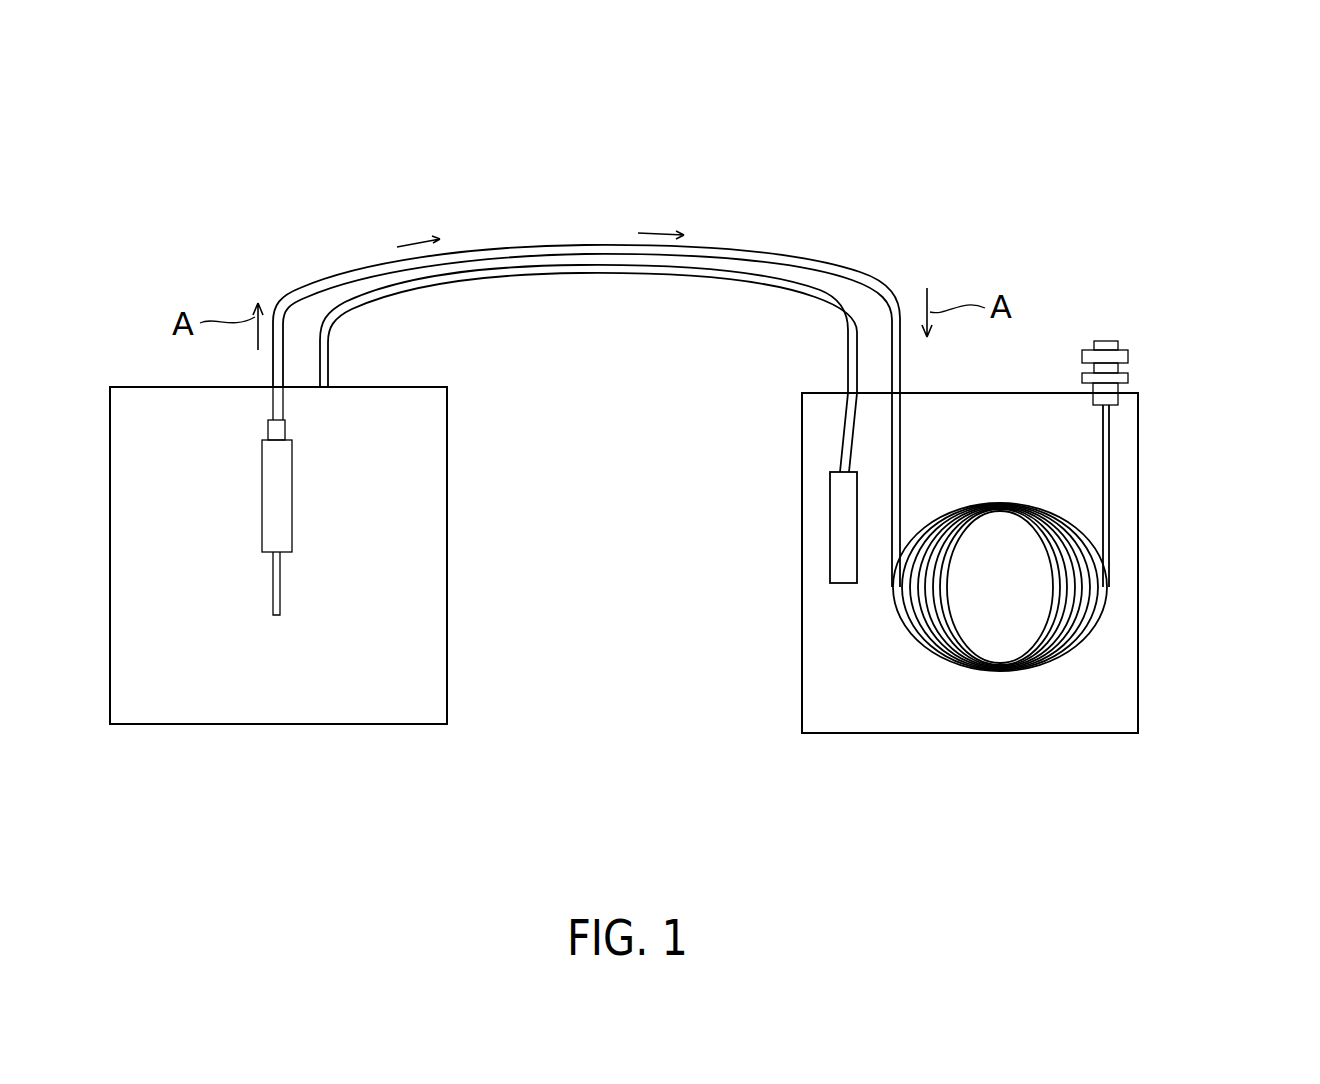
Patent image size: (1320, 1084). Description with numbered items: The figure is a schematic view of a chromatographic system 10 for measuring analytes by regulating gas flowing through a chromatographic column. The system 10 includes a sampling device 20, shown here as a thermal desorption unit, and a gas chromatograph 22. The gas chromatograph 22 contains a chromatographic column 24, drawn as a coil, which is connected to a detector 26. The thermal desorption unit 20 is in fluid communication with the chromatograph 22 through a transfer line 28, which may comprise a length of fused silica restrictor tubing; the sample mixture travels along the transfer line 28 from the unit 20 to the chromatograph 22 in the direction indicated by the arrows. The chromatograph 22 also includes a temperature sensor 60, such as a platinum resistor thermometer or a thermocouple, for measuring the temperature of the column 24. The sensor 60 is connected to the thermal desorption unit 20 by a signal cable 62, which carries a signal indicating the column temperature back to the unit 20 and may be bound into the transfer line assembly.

The chromatographic system 10 is at (1280, 147).
The sampling device 20 is at (447, 535).
The gas chromatograph 22 is at (802, 525).
The chromatographic column 24 is at (906, 640).
The detector 26 is at (1130, 355).
The transfer line 28 is at (547, 245).
The temperature sensor 60 is at (830, 578).
The signal cable 62 is at (541, 275).